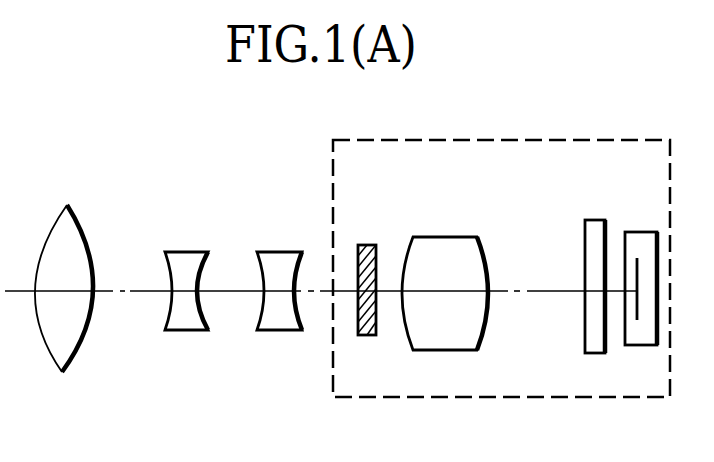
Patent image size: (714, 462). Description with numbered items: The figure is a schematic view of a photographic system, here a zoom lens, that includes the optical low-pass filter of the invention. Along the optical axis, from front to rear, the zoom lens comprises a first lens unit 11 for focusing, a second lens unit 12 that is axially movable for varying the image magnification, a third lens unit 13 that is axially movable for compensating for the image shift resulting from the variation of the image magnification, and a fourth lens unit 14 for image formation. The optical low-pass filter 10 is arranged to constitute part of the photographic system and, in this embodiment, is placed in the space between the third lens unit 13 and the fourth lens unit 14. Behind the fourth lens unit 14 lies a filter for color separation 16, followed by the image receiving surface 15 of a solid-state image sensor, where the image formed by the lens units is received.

The optical low-pass filter 10 is at (370, 337).
The first lens unit 11 is at (62, 372).
The second lens unit 12 is at (185, 328).
The third lens unit 13 is at (278, 328).
The fourth lens unit 14 is at (440, 343).
The image receiving surface of a solid-state image sensor 15 is at (637, 318).
The filter for color separation 16 is at (592, 352).